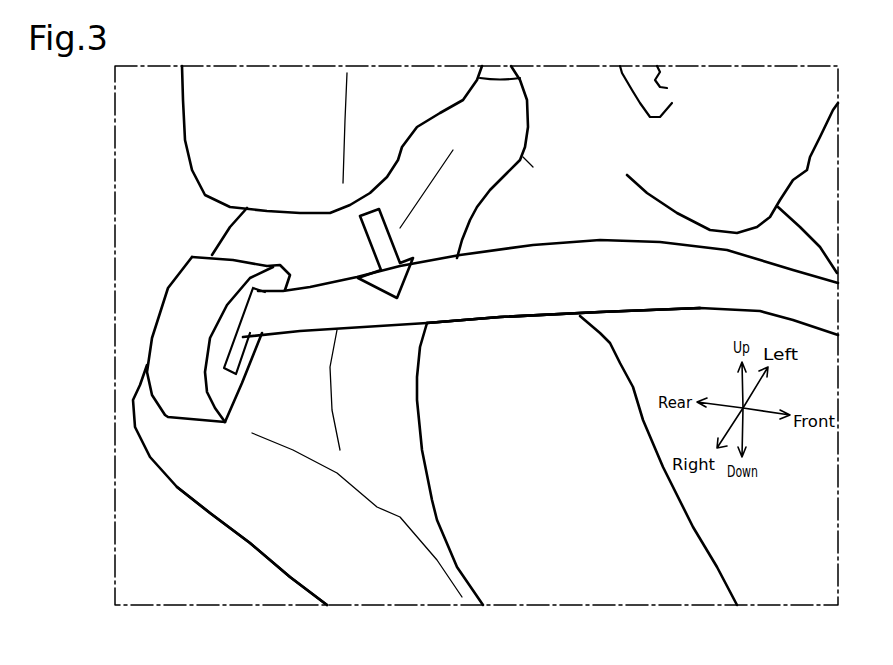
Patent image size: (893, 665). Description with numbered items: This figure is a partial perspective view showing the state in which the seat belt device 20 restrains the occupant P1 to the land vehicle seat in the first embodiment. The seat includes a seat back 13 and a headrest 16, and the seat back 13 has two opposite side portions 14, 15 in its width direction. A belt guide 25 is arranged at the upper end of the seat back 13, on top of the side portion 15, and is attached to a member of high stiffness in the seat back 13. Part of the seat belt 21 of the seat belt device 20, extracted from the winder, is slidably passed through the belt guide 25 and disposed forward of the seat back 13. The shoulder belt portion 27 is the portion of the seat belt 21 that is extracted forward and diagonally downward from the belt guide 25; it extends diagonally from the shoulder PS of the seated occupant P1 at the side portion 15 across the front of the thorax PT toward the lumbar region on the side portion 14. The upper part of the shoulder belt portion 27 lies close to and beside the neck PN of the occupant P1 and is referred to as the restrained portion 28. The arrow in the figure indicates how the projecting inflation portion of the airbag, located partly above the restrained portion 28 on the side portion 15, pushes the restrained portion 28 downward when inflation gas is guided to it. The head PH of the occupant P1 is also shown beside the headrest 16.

The seat back 13 is at (242, 240).
The side portion 14 is at (503, 90).
The side portion 15 is at (240, 533).
The headrest 16 is at (195, 122).
The seat belt device 20 is at (578, 230).
The seat belt 21 is at (563, 353).
The belt guide 25 is at (175, 323).
The shoulder belt portion 27 is at (517, 307).
The restrained portion 28 is at (368, 313).
The neck PN is at (520, 153).
The head of occupant PH is at (725, 85).
The shoulder PS is at (478, 337).
The thorax PT is at (650, 395).
The occupant P1 is at (430, 445).